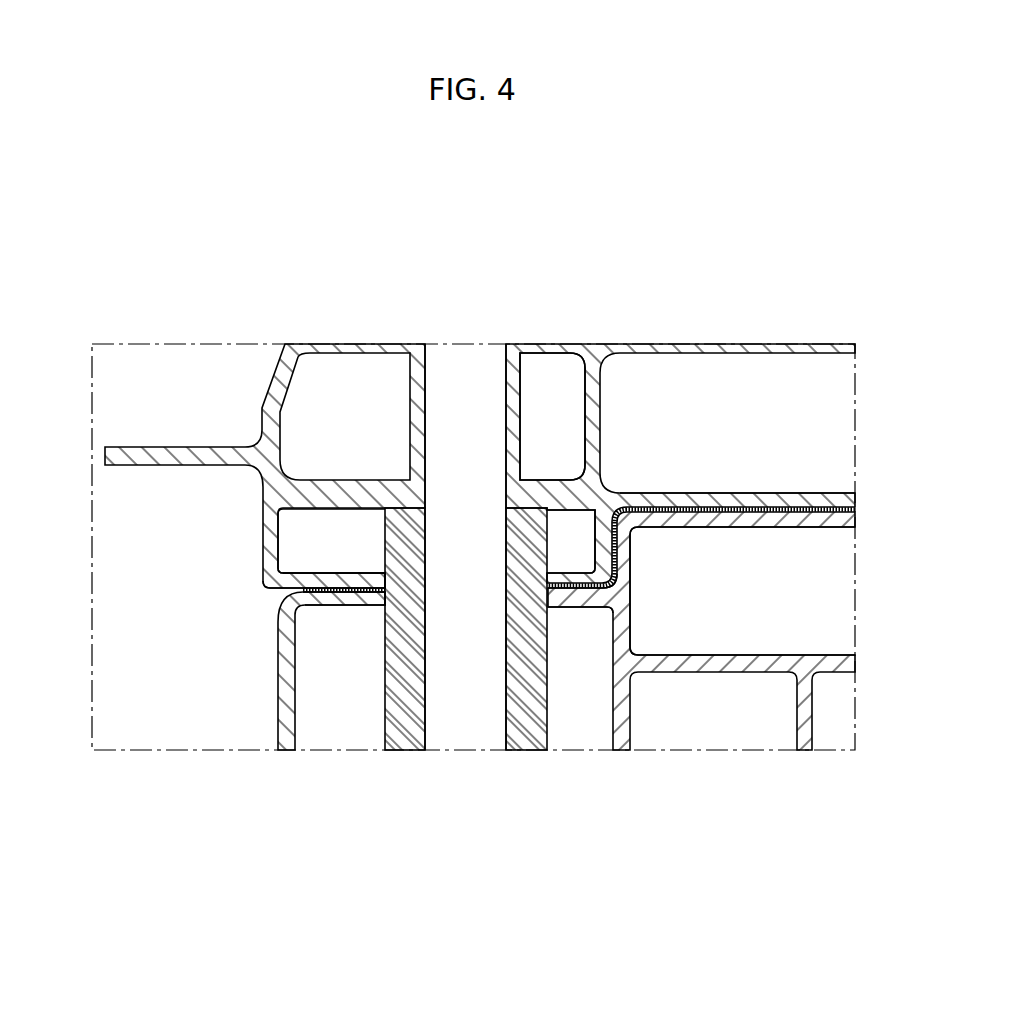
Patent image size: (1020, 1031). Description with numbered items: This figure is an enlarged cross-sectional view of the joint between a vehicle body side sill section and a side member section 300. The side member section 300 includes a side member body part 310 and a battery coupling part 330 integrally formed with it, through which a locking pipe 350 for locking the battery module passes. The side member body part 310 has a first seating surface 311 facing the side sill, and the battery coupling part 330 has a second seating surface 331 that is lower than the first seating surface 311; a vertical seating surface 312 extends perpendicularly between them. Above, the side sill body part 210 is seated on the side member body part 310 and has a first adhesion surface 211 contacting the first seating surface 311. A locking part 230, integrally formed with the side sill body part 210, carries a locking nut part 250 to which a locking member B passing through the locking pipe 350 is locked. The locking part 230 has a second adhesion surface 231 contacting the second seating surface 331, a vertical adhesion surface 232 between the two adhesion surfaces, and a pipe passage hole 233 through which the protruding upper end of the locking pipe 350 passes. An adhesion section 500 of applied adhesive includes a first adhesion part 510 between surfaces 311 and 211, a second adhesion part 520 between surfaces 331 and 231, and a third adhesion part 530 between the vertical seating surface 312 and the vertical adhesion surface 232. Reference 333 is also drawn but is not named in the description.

The side sill body part 210 is at (795, 346).
The first adhesion surface 211 is at (825, 532).
The locking part 230 is at (329, 346).
The second adhesion surface 231 is at (343, 594).
The vertical adhesion surface 232 is at (550, 548).
The pipe passage hole 233 is at (390, 578).
The locking nut part 250 is at (515, 422).
The side member section 300 is at (701, 733).
The side member body part 310 is at (805, 713).
The first seating surface 311 is at (780, 530).
The vertical seating surface 312 is at (635, 540).
The battery coupling part 330 is at (278, 692).
The second seating surface 331 is at (490, 585).
The flange 333 is at (393, 606).
The locking pipe 350 is at (523, 740).
The adhesion section 500 is at (701, 360).
The first adhesion part 510 is at (728, 507).
The second adhesion part 520 is at (570, 592).
The third adhesion part 530 is at (598, 530).
The locking member B is at (472, 380).